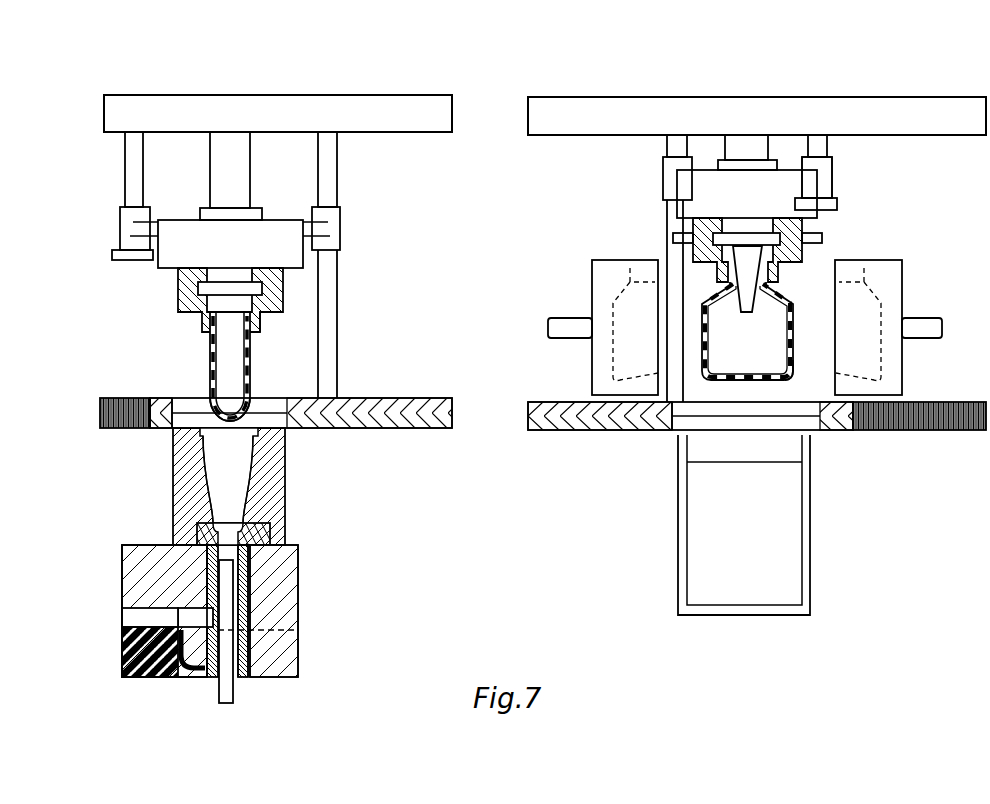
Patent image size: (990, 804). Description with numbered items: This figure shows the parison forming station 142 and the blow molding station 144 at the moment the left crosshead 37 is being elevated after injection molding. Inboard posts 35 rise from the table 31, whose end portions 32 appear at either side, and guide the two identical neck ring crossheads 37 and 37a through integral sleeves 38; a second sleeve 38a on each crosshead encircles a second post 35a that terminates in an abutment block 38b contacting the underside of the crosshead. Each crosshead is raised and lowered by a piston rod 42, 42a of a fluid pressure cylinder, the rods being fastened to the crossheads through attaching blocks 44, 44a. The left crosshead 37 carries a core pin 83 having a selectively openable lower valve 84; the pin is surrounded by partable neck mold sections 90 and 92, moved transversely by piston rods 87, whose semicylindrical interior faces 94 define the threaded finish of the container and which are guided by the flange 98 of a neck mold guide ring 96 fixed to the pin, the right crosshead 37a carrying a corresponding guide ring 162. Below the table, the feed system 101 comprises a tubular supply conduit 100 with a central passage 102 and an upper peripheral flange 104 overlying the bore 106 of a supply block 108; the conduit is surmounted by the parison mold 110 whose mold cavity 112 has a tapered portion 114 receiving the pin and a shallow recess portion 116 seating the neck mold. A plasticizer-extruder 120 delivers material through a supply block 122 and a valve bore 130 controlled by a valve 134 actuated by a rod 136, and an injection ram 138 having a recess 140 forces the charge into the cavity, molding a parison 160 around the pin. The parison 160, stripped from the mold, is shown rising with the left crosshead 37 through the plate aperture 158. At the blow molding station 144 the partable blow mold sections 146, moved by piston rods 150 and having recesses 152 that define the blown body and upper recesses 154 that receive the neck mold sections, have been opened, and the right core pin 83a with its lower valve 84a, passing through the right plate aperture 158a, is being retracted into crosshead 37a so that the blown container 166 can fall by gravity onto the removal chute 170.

The second post 35a is at (143, 168).
The inboard post 35 is at (337, 188).
The piston rod 42 is at (250, 160).
The piston rod 42a is at (748, 147).
The attaching block 44 is at (262, 213).
The plate 44a is at (737, 169).
The neck ring crosshead 37 is at (190, 258).
The neck ring crosshead 37a is at (712, 201).
The sleeve 38 is at (340, 228).
The second sleeve 38a is at (120, 240).
The abutment block 38b is at (112, 258).
The neck mold section 90 is at (178, 302).
The neck mold section 92 is at (283, 287).
The neck mold guide ring 96 is at (232, 283).
The plate 162 is at (770, 257).
The flange 98 is at (200, 312).
The semicylindrical interior face 94 is at (260, 324).
The piston rod 87 is at (673, 239).
The core pin 83 is at (214, 367).
The parison 160 is at (250, 369).
The lower valve 84 is at (245, 418).
The core pin 83a is at (738, 318).
The bottle 84a is at (784, 324).
The bottle corner 166 is at (793, 365).
The table 31 is at (385, 396).
The threaded rod 32 is at (100, 420).
The plate aperture 158 is at (172, 428).
The support 158a is at (678, 433).
The parison mold 110 is at (273, 512).
The recess portion 116 is at (278, 446).
The mold cavity 112 is at (240, 460).
The tapered portion 114 is at (248, 480).
The upper peripheral flange 104 is at (285, 525).
The tubular supply conduit 100 is at (247, 583).
The central passage 102 is at (237, 566).
The bore 106 is at (246, 554).
The supply block 108 is at (280, 666).
The recess 140 is at (298, 630).
The injection ram 138 is at (248, 650).
The valve 134 is at (185, 607).
The valve bore 130 is at (145, 612).
The rod 136 is at (125, 620).
The supply block 122 is at (122, 638).
The plasticizer-extruder 120 is at (112, 668).
The feed system 101 is at (105, 581).
The parison forming station 142 is at (358, 629).
The blow mold section 146 is at (592, 381).
The recess 154 is at (630, 268).
The recess 152 is at (613, 303).
The piston rod 150 is at (548, 331).
The blow molding station 144 is at (878, 218).
The removal chute 170 is at (795, 499).